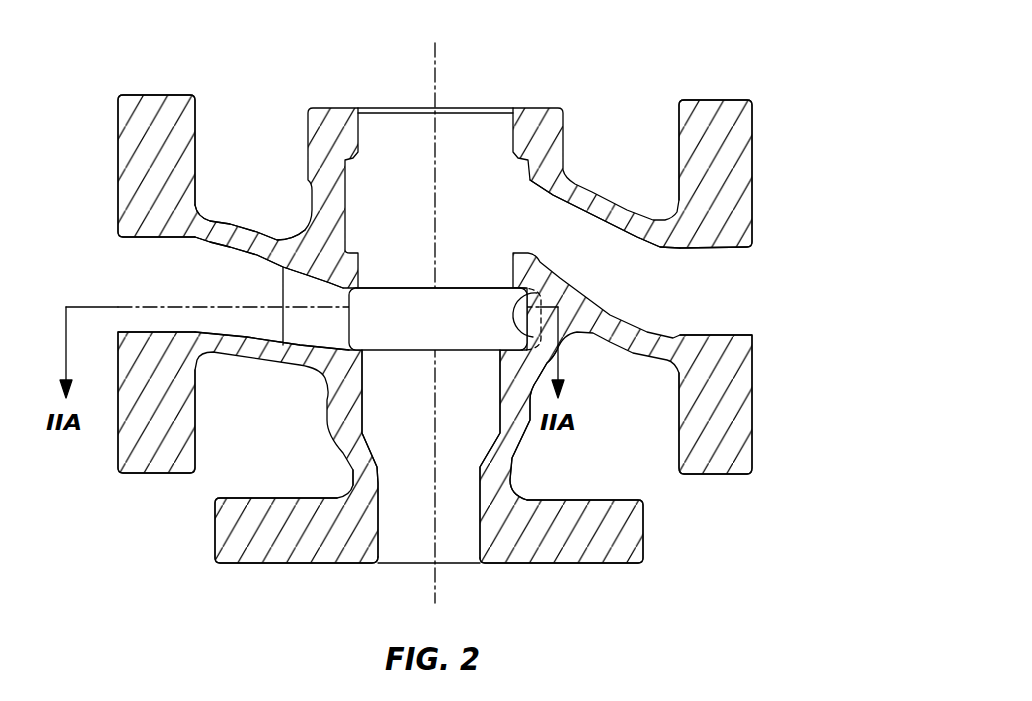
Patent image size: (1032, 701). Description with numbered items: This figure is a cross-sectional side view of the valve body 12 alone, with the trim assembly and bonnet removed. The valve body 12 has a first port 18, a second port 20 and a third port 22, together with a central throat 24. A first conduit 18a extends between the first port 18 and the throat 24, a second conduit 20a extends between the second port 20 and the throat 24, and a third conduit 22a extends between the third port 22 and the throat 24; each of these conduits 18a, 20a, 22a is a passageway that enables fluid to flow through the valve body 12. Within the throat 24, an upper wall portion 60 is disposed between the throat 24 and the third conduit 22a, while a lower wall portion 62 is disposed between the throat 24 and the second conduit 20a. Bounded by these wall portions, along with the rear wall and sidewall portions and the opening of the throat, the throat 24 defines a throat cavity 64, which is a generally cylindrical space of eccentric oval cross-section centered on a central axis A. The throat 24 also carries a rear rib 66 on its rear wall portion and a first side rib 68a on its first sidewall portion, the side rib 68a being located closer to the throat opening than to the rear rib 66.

The valve body 12 is at (718, 92).
The first port 18 is at (140, 240).
The first conduit 18a is at (250, 340).
The second port 20 is at (478, 550).
The second conduit 20a is at (490, 458).
The third port 22 is at (737, 248).
The third conduit 22a is at (585, 216).
The throat 24 is at (477, 334).
The upper wall portion 60 is at (452, 290).
The lower wall portion 62 is at (407, 347).
The throat cavity 64 is at (379, 288).
The rear rib 66 is at (537, 293).
The first side rib 68a is at (300, 287).
The central axis A is at (437, 52).